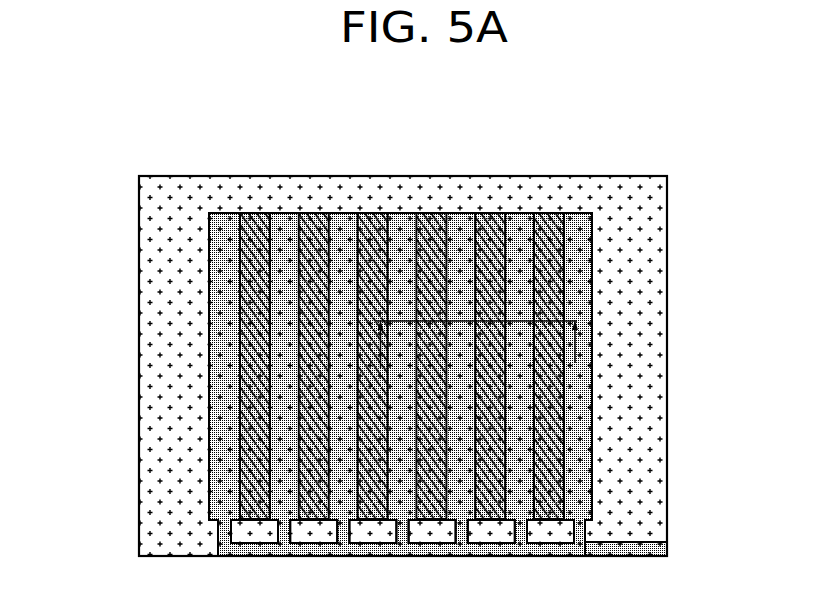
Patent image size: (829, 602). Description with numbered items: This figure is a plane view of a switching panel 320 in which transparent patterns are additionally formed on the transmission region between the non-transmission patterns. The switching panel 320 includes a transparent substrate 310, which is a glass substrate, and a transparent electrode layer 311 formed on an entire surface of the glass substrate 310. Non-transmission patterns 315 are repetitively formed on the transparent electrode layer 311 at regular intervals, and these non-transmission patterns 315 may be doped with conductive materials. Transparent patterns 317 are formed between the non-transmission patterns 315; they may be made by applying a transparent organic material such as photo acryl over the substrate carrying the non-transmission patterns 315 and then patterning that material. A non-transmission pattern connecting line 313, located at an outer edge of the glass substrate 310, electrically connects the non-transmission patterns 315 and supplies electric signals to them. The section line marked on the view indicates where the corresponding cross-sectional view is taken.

The transparent substrate 310 is at (668, 332).
The transparent electrode layer 311 is at (645, 371).
The non-transmission pattern connecting line 313 is at (665, 548).
The non-transmission patterns 315 is at (581, 438).
The transparent patterns 317 is at (540, 490).
The switching panel 320 is at (132, 240).